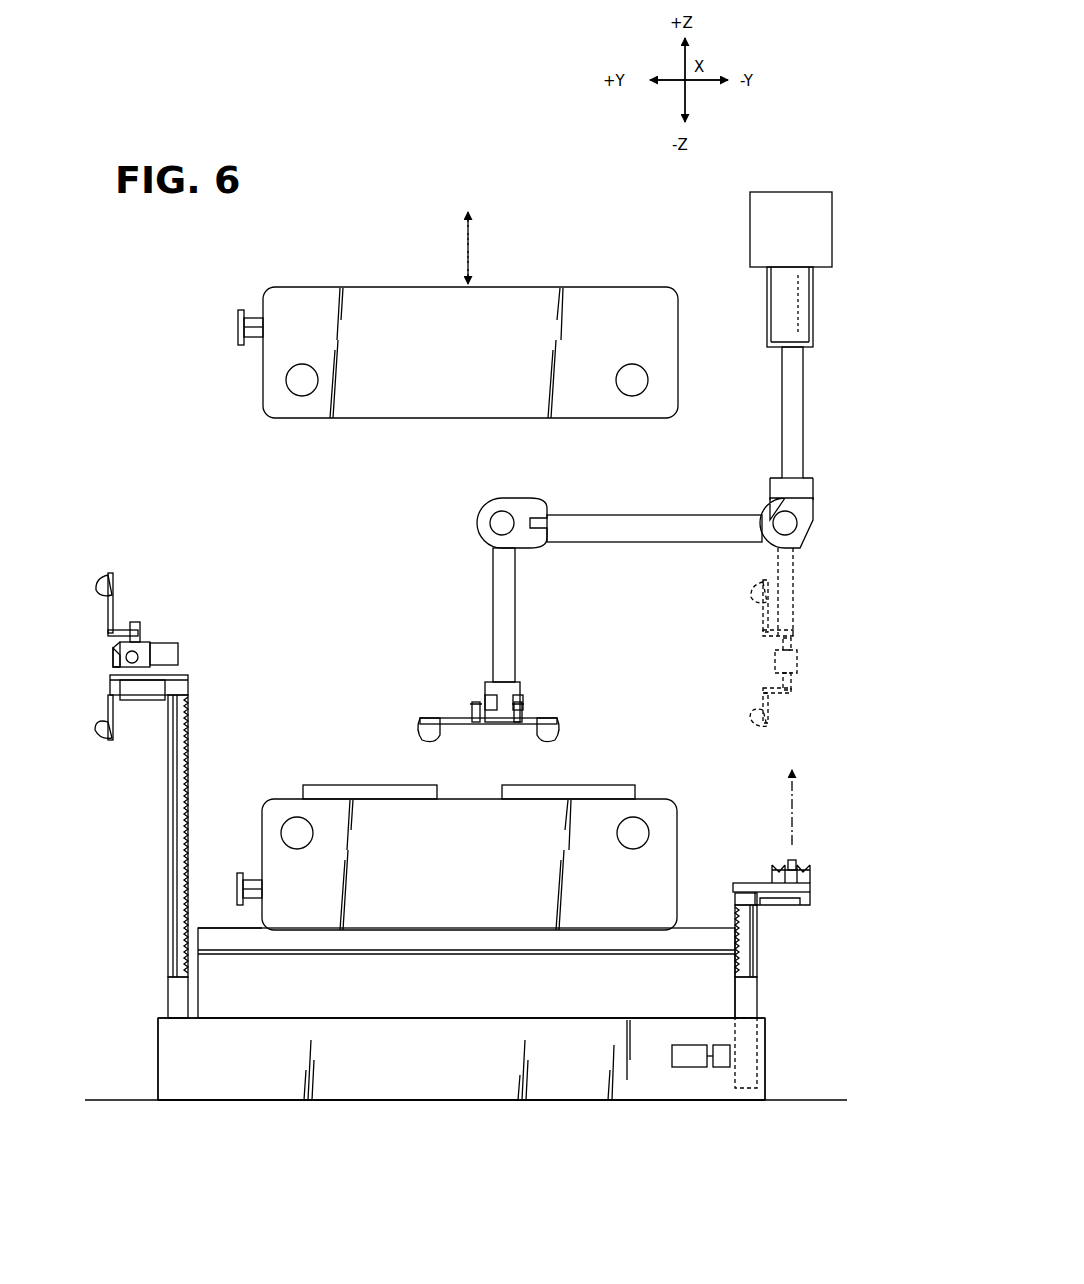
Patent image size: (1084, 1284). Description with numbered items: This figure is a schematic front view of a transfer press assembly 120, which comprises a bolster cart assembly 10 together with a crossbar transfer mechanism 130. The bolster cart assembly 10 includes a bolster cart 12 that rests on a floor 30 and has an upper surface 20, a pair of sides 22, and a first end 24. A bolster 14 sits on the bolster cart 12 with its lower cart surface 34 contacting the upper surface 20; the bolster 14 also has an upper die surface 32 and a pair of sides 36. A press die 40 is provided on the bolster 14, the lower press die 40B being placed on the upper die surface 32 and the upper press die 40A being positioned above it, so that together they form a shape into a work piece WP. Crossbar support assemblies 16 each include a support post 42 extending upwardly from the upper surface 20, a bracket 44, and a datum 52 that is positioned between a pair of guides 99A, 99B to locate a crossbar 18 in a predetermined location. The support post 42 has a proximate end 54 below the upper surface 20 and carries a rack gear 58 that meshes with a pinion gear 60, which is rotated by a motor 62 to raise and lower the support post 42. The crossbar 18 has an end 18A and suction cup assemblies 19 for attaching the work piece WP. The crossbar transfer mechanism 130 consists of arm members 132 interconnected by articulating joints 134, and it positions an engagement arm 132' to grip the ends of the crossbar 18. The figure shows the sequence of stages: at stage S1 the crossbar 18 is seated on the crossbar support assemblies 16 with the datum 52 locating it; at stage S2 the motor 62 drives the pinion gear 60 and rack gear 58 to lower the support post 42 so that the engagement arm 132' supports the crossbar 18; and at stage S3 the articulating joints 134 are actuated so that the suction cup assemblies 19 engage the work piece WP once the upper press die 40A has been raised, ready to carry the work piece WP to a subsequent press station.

The bolster cart assembly 10 is at (105, 812).
The bolster cart 12 is at (148, 1048).
The bolster 14 is at (207, 967).
The crossbar support assembly 16 is at (188, 665).
The crossbar 18 is at (103, 623).
The end of crossbar 18A is at (140, 648).
The suction cup assembly 19 is at (458, 710).
The upper surface 20 is at (335, 1018).
The side 22 is at (175, 1072).
The first end 24 is at (220, 1088).
The floor 30 is at (133, 1100).
The upper die surface 32 is at (213, 928).
The lower cart surface 34 is at (490, 1022).
The side 36 is at (197, 998).
The press die 40 is at (218, 425).
The upper press die 40A is at (333, 287).
The lower press die 40B is at (262, 822).
The support post 42 is at (177, 855).
The bracket 44 is at (140, 686).
The datum 52 is at (795, 862).
The proximate end 54 is at (745, 1090).
The rack gear 58 is at (186, 828).
The pinion gear 60 is at (727, 1067).
The motor 62 is at (688, 1043).
The guide 99A is at (118, 660).
The guide 99B is at (150, 655).
The transfer press assembly 120 is at (318, 166).
The crossbar transfer mechanism 130 is at (740, 228).
The arm member 132 is at (711, 404).
The engagement arm 132' is at (534, 615).
The articulating joint 134 is at (482, 505).
The stage S1 is at (165, 580).
The stage S2 is at (800, 660).
The stage S3 is at (455, 633).
The work piece WP is at (610, 785).